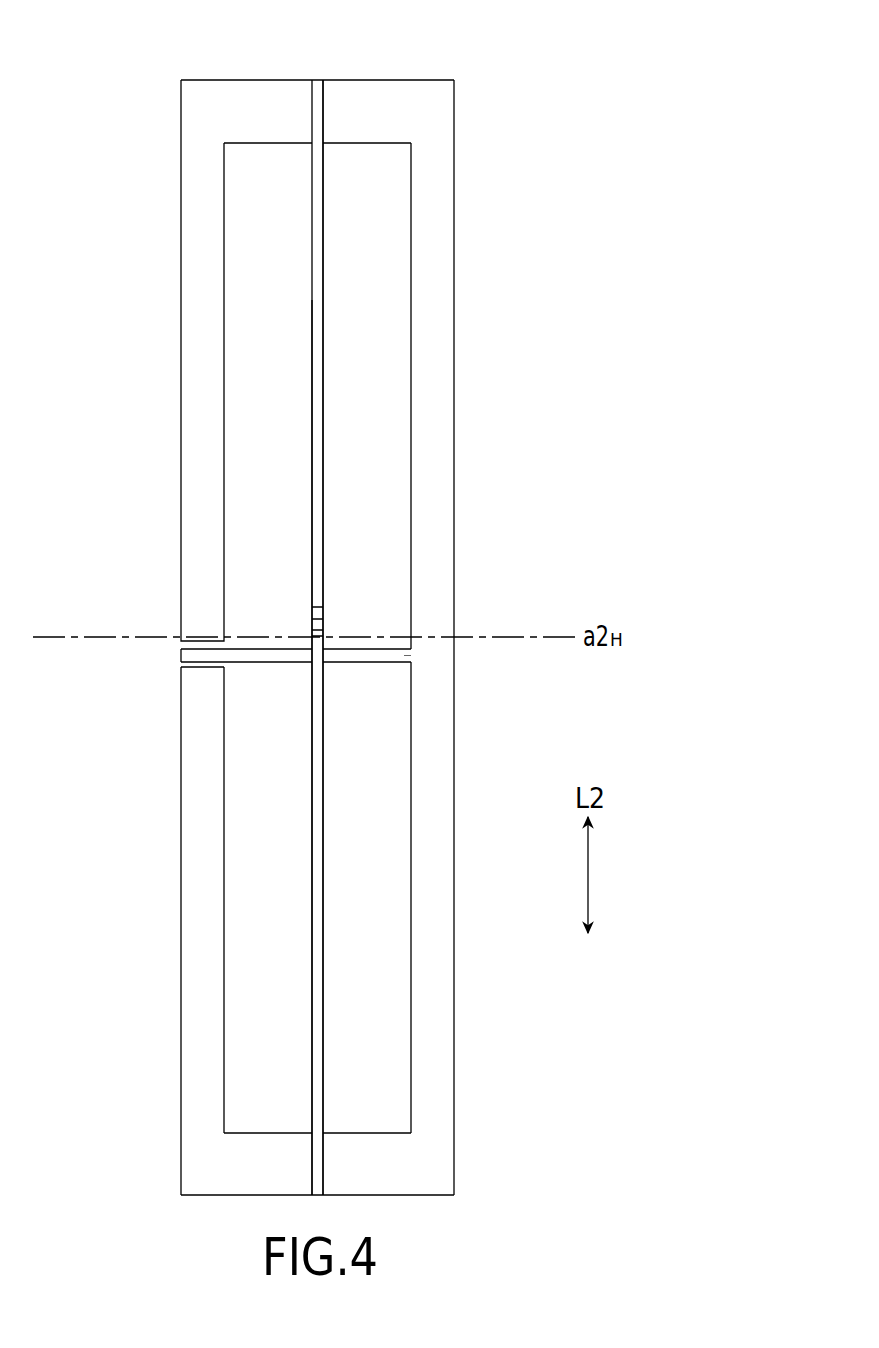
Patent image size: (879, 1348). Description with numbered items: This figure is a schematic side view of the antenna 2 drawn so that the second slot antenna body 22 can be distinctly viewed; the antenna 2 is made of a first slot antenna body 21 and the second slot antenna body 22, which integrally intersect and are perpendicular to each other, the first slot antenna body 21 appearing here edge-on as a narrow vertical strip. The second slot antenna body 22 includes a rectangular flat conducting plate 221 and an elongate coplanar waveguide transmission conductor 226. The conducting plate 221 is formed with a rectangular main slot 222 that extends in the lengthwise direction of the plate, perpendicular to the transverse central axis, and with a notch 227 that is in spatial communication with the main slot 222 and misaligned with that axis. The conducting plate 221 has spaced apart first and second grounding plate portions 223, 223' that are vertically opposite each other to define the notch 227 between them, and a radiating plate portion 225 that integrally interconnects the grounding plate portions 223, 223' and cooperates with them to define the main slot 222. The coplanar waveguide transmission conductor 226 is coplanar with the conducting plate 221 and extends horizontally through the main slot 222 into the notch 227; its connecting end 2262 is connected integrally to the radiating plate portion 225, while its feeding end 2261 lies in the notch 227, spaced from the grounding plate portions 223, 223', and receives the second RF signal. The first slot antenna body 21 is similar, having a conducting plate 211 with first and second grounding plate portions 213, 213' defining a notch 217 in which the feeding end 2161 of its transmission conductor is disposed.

The antenna 2 is at (118, 65).
The second slot antenna body 22 is at (212, 73).
The first slot antenna body 21 is at (318, 77).
The conducting plate 211 is at (326, 110).
The conducting plate 221 is at (458, 130).
The main slot 222 is at (392, 192).
The radiating plate portion 225 is at (440, 247).
The first grounding plate portion 213 is at (425, 450).
The notch 217 is at (320, 607).
The feeding end 2161 is at (320, 622).
The connecting end 2262 is at (398, 653).
The second grounding plate portion 213' is at (427, 920).
The second grounding plate portion 223' is at (160, 360).
The first grounding plate portion 223 is at (160, 931).
The notch 227 is at (182, 666).
The coplanar waveguide transmission conductor 226 is at (262, 657).
The feeding end 2261 is at (180, 656).